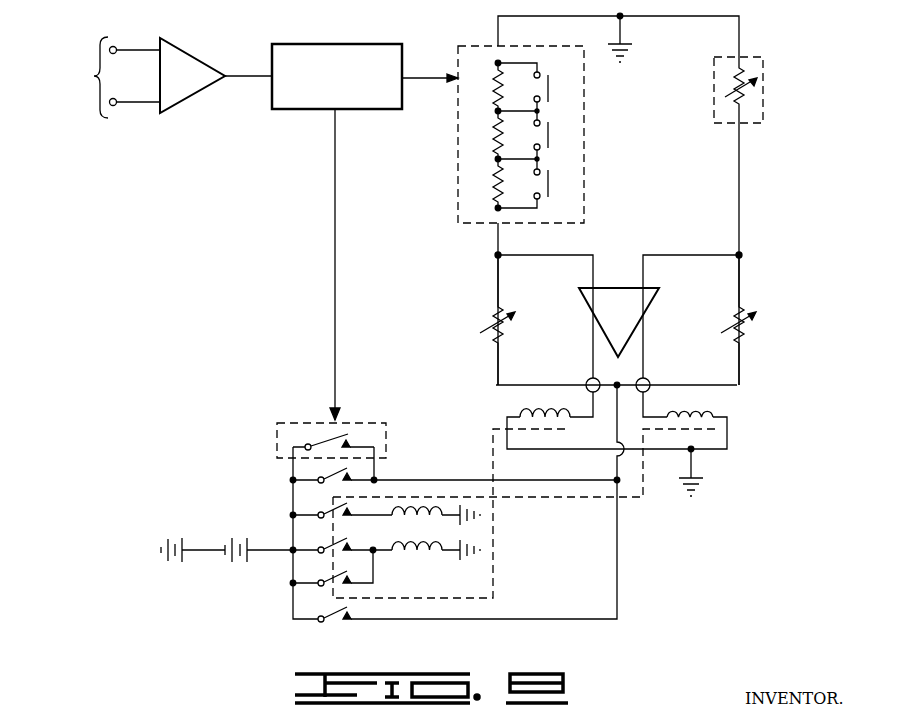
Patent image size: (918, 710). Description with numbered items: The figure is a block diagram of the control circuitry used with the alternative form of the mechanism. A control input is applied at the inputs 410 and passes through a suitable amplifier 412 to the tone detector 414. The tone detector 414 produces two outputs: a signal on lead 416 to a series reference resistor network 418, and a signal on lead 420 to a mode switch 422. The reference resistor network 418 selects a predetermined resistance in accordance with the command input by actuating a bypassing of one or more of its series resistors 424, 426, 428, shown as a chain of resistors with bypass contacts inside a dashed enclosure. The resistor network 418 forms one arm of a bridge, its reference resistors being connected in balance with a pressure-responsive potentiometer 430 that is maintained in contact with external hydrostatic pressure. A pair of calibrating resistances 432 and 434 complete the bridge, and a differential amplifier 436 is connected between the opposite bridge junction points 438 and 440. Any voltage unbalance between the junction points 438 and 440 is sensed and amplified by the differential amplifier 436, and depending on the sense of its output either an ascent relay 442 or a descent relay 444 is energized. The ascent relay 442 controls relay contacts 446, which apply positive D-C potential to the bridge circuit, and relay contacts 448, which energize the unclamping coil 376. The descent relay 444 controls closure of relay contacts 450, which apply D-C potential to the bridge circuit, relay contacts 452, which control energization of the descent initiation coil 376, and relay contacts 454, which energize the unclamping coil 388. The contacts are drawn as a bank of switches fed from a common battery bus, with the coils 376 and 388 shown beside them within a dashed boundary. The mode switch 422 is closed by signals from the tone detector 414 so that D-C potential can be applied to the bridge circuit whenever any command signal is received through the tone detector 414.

The inputs 410 is at (107, 77).
The amplifier 412 is at (183, 104).
The tone detector 414 is at (304, 111).
The lead 416 is at (418, 80).
The series reference resistor network 418 is at (457, 165).
The lead 420 is at (337, 250).
The mode switch 422 is at (360, 421).
The series resistor 424 is at (492, 86).
The series resistor 426 is at (492, 134).
The series resistor 428 is at (492, 182).
The pressure-responsive potentiometer 430 is at (764, 103).
The calibrating resistance 432 is at (488, 337).
The calibrating resistance 434 is at (744, 337).
The differential amplifier 436 is at (633, 318).
The bridge junction point 438 is at (494, 256).
The bridge junction point 440 is at (742, 254).
The ascent relay 442 is at (538, 409).
The descent relay 444 is at (704, 413).
The relay contacts 446 is at (325, 622).
The relay contacts 448 is at (317, 580).
The relay contacts 450 is at (317, 477).
The relay contacts 452 is at (317, 512).
The relay contacts 454 is at (317, 547).
The unclamping coil 376 is at (409, 508).
The unclamping coil 388 is at (405, 556).